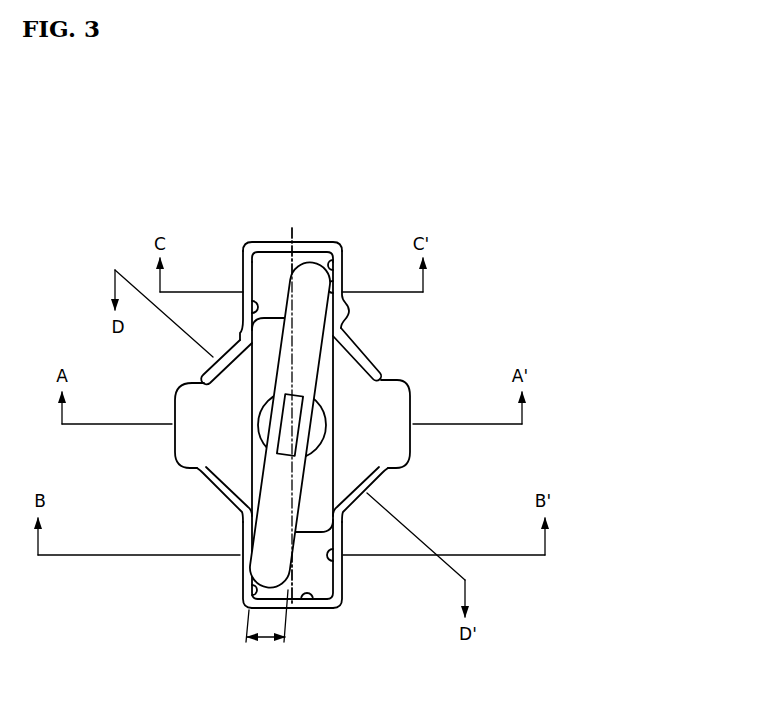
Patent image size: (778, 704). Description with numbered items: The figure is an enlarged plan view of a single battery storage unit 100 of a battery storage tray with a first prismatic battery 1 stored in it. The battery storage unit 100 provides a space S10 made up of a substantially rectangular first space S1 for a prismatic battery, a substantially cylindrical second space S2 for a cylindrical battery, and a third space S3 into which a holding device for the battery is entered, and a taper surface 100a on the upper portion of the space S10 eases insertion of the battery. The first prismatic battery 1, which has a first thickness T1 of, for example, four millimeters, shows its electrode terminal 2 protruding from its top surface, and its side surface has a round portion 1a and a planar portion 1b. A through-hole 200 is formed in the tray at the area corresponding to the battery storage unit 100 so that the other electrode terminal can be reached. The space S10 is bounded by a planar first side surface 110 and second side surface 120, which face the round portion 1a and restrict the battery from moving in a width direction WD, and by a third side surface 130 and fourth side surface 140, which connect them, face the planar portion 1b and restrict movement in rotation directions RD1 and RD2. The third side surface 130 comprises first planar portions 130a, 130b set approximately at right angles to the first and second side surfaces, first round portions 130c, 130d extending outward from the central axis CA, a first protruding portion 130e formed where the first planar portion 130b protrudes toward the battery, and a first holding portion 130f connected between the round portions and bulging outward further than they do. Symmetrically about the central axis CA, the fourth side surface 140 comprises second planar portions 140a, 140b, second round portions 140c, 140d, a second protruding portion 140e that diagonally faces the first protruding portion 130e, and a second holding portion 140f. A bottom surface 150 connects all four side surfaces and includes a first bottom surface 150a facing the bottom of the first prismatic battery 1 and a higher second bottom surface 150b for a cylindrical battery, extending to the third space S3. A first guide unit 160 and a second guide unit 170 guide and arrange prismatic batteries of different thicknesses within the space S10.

The battery storage unit 100 is at (125, 196).
The taper surface 100a is at (268, 242).
The first prismatic battery 1 is at (289, 562).
The round portion 1a is at (302, 266).
The planar portion 1b is at (222, 349).
The electrode terminal 2 is at (301, 405).
The first side surface 110 is at (303, 261).
The second side surface 120 is at (315, 598).
The third side surface 130 is at (246, 286).
The first planar portion 130a is at (250, 307).
The first planar portion 130b is at (248, 592).
The first round portion 130c is at (200, 377).
The first round portion 130d is at (224, 502).
The first protruding portion 130e is at (252, 573).
The first holding portion 130f is at (175, 413).
The fourth side surface 140 is at (337, 576).
The second planar portion 140a is at (331, 260).
The second planar portion 140b is at (336, 557).
The second round portion 140c is at (371, 371).
The second round portion 140d is at (344, 497).
The second protruding portion 140e is at (331, 284).
The second holding portion 140f is at (412, 404).
The bottom surface 150 is at (116, 478).
The first bottom surface 150a is at (256, 476).
The second bottom surface 150b is at (256, 473).
The first guide unit 160 is at (258, 262).
The second guide unit 170 is at (324, 581).
The through-hole 200 is at (256, 441).
The first space S1 is at (326, 489).
The second space S2 is at (355, 474).
The third space S3 is at (396, 452).
The space S10 is at (455, 452).
The first thickness T1 is at (267, 628).
The central axis CA is at (291, 404).
The width direction WD is at (290, 176).
The rotation direction RD1 is at (220, 178).
The rotation direction RD2 is at (365, 178).